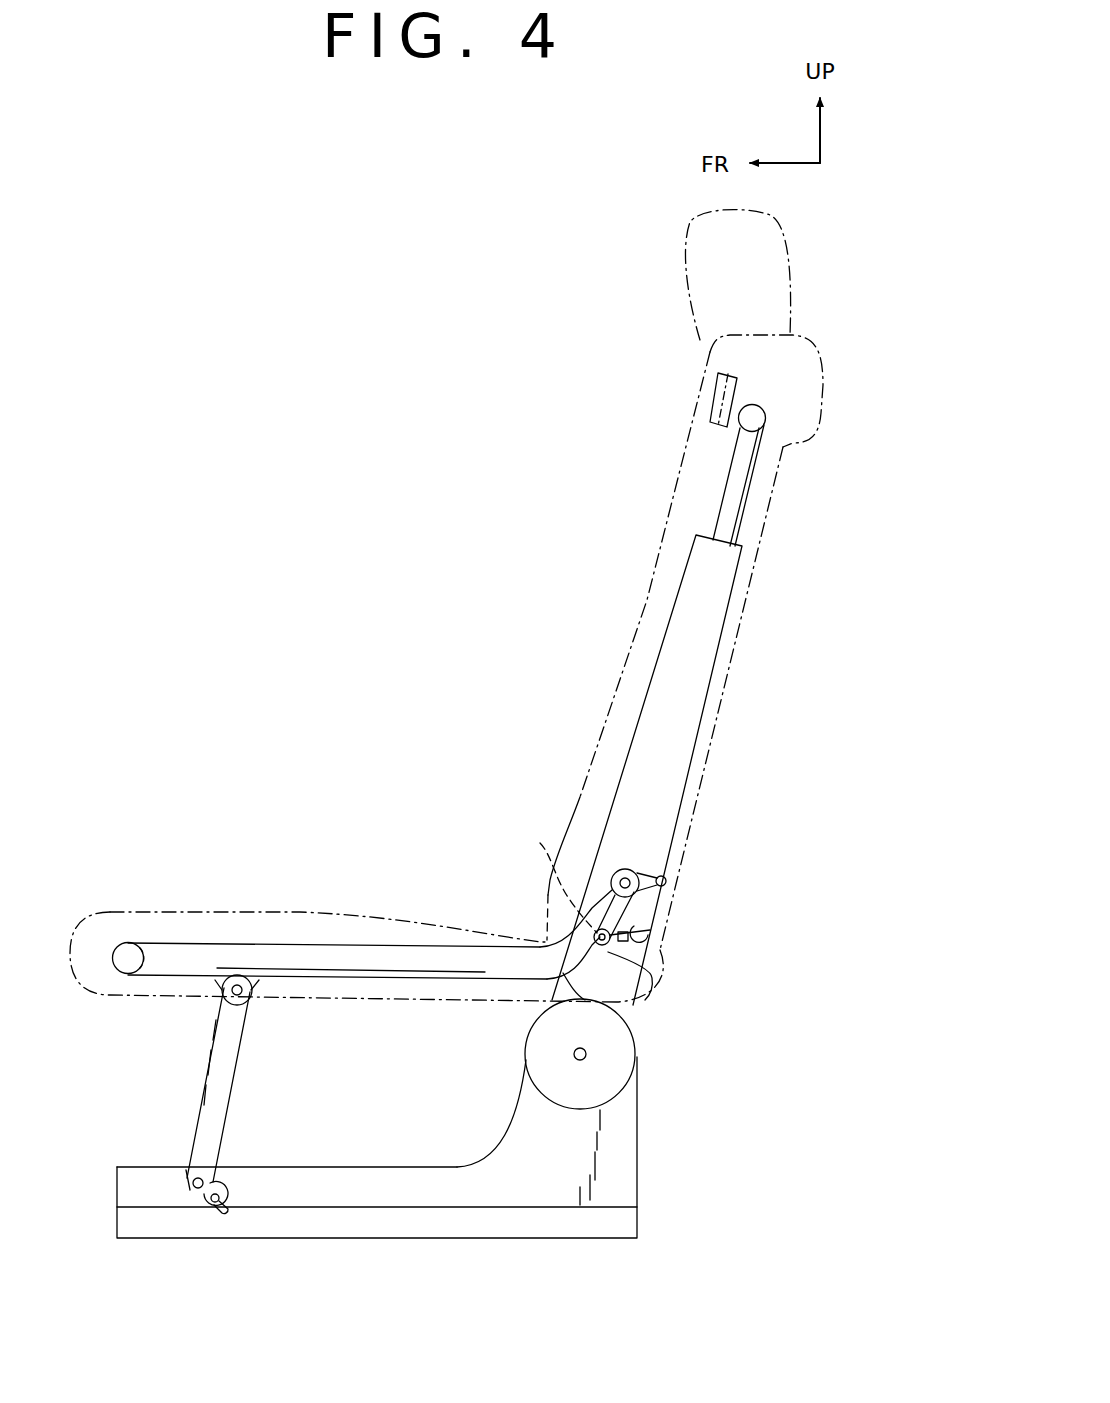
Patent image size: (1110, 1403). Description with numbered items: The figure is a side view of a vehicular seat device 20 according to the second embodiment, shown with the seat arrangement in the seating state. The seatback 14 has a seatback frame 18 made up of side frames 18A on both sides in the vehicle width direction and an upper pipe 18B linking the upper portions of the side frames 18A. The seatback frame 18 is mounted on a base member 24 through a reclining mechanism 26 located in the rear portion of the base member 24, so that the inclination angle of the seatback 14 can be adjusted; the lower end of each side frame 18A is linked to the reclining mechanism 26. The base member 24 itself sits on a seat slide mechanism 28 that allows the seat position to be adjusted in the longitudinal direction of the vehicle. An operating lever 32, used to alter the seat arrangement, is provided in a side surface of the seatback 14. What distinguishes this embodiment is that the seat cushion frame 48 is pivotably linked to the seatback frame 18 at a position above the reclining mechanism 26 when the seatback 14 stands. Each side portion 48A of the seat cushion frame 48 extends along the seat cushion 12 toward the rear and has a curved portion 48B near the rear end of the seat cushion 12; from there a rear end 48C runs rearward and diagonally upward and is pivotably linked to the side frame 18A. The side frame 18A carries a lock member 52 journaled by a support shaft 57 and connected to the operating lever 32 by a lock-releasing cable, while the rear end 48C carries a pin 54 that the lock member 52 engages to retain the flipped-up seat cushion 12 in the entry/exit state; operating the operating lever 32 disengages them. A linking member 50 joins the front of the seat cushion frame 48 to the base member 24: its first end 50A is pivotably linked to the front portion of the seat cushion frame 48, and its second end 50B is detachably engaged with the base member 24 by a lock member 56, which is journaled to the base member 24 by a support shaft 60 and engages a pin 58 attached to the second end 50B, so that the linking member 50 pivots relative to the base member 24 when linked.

The seat cushion 12 is at (190, 905).
The seatback 14 is at (640, 607).
The seatback frame 18 is at (697, 705).
The side frame 18A is at (675, 760).
The upper pipe 18B is at (745, 490).
The vehicular seat device 20 is at (262, 450).
The base member 24 is at (638, 1152).
The reclining mechanism 26 is at (628, 1054).
The seat slide mechanism 28 is at (383, 1207).
The operating lever 32 is at (710, 405).
The seat cushion frame 48 is at (325, 938).
The side portion 48A is at (393, 943).
The curved portion 48B is at (557, 940).
The rear end 48C is at (625, 870).
The linking member 50 is at (245, 1052).
The first end 50A is at (250, 996).
The second end 50B is at (213, 1180).
The lock member 52 is at (640, 950).
The pin 54 is at (665, 875).
The lock member 56 is at (180, 1197).
The support shaft 57 is at (551, 875).
The pin 58 is at (210, 1172).
The support shaft 60 is at (222, 1200).